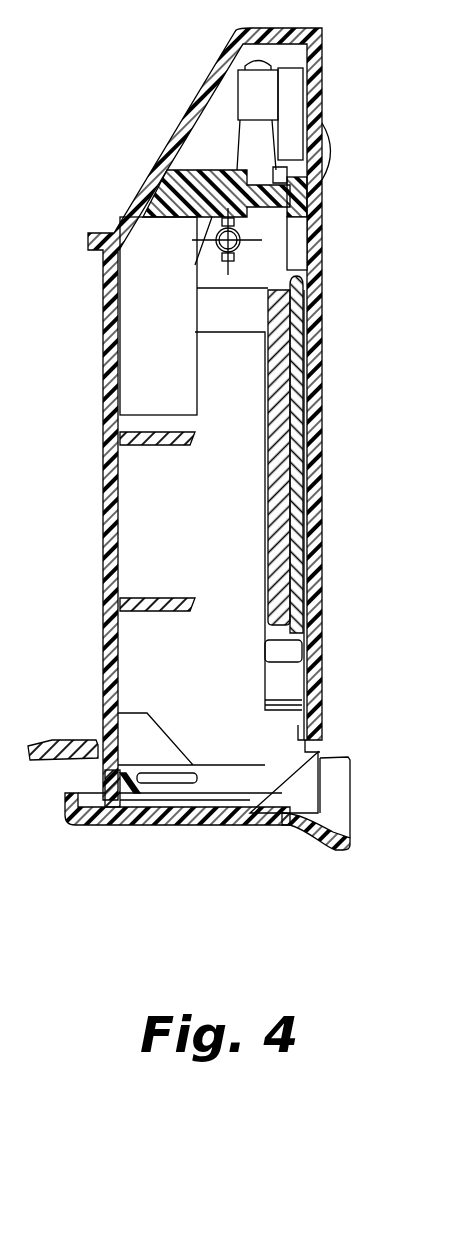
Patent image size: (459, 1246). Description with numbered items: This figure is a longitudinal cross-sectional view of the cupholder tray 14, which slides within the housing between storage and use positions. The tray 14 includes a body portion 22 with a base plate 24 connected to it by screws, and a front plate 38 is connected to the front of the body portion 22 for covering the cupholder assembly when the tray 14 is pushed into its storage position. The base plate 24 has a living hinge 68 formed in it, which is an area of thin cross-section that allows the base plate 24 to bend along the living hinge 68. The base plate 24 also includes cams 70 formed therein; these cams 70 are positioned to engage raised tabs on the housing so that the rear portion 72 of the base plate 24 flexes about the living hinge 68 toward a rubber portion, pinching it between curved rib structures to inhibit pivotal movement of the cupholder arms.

The tray 14 is at (218, 481).
The body portion 22 is at (103, 577).
The base plate 24 is at (322, 491).
The front plate 38 is at (235, 822).
The living hinge 68 is at (322, 245).
The cams 70 is at (333, 152).
The rear portion 72 is at (322, 95).